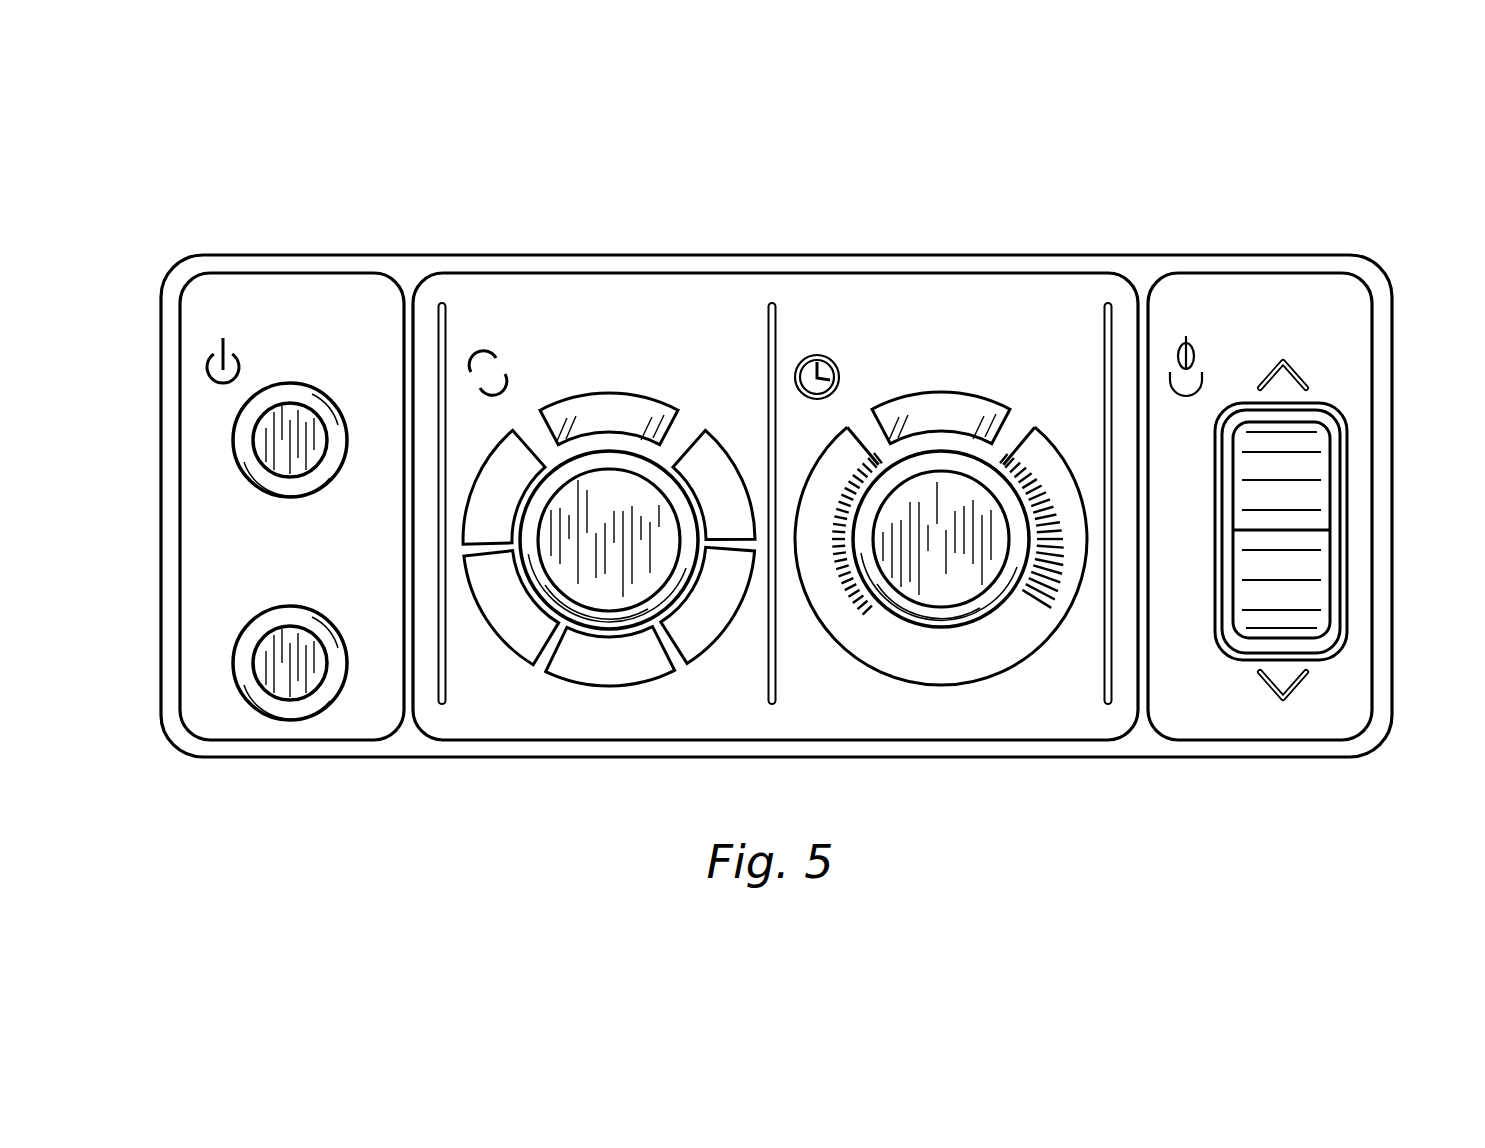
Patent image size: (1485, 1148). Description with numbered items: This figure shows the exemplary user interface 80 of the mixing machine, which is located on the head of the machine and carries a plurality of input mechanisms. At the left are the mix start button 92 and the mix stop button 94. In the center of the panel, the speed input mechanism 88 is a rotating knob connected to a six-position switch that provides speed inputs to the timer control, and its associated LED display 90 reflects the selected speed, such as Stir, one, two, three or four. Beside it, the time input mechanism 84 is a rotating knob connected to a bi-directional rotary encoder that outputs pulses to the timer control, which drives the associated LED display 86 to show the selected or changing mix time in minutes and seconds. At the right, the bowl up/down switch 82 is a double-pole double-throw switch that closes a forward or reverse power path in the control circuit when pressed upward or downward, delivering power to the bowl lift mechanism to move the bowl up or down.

The user interface 80 is at (836, 218).
The bowl up/down switch 82 is at (1312, 463).
The time input mechanism 84 is at (952, 593).
The LED display 86 is at (993, 417).
The speed input mechanism 88 is at (607, 558).
The LED display 90 is at (592, 412).
The mix start button 92 is at (268, 437).
The mix stop button 94 is at (268, 663).